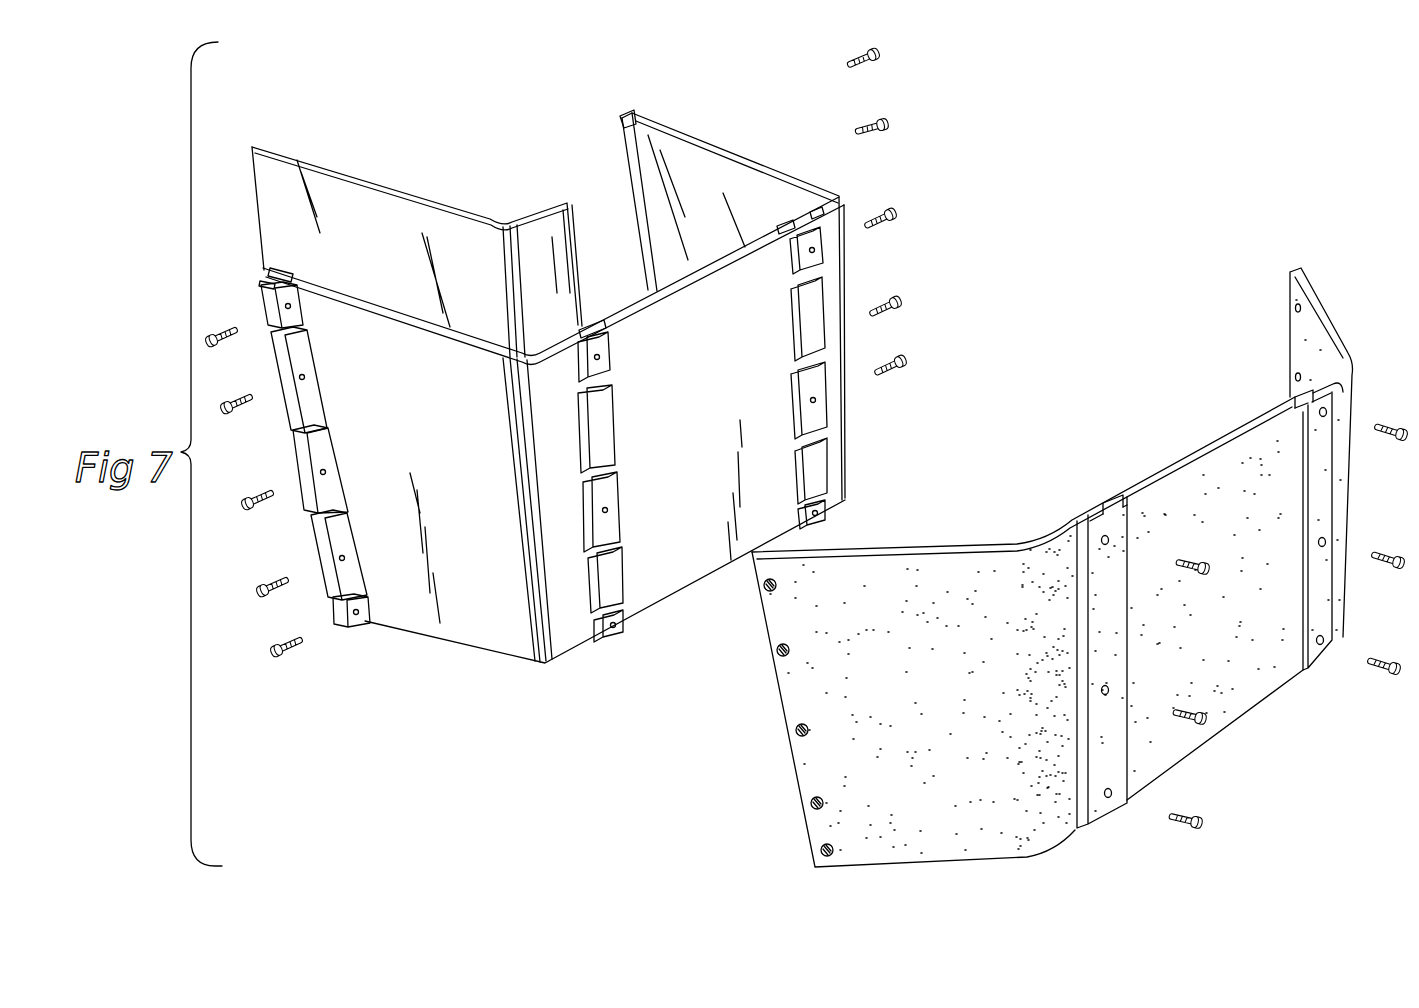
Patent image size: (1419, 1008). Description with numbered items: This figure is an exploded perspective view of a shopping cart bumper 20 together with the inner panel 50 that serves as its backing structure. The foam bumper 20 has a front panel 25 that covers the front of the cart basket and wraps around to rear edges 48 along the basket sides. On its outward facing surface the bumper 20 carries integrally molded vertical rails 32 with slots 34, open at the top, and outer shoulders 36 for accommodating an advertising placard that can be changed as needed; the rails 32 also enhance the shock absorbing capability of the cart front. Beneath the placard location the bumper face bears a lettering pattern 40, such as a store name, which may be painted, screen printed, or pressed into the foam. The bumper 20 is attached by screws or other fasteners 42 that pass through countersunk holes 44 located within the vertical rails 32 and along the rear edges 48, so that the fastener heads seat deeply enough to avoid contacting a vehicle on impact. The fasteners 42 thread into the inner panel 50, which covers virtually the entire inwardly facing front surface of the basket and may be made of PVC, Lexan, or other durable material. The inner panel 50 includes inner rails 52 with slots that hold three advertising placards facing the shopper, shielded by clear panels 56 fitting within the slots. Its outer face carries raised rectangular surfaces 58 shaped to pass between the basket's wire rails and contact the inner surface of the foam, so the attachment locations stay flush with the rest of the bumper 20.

The shopping cart bumper 20 is at (1222, 725).
The bumper front panel 25 is at (1195, 448).
The vertical rails 32 is at (1327, 613).
The slots 34 is at (1292, 398).
The outer shoulders 36 is at (1292, 430).
The lettering pattern 40 is at (1218, 593).
The fasteners 42 is at (238, 398).
The countersunk holes 44 is at (1296, 372).
The rear edges 48 is at (1290, 292).
The inner panel 50 is at (725, 412).
The inner rails 52 is at (267, 268).
The clear panels 56 is at (426, 205).
The raised rectangular surfaces 58 is at (335, 463).